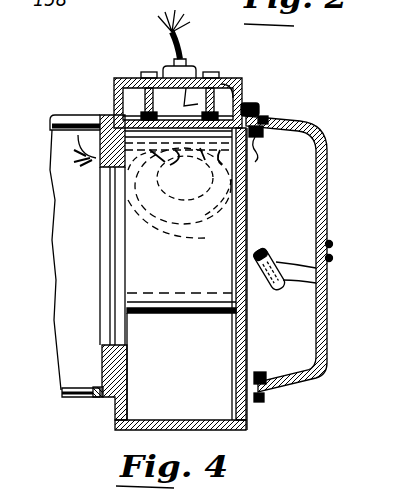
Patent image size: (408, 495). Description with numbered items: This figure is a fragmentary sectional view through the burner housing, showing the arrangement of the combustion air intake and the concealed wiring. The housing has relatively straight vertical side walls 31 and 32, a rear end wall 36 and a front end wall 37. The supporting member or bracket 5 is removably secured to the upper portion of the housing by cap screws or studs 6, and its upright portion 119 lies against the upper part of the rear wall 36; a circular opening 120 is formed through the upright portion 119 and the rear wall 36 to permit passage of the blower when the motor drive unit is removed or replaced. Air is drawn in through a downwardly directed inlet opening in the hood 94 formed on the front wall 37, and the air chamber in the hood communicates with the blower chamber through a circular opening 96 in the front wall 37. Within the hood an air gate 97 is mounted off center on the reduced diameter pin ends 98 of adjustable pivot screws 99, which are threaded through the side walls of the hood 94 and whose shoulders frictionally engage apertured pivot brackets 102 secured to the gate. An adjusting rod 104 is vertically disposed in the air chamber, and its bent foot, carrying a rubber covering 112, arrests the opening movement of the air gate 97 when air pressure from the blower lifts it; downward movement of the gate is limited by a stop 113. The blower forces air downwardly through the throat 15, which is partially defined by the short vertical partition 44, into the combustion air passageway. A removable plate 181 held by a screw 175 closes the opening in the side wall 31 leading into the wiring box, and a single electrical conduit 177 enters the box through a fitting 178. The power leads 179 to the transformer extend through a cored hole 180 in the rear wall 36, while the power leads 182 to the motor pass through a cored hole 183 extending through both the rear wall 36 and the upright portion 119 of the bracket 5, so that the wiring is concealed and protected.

The supporting member or bracket 5 is at (78, 398).
The cap screws or studs 6 is at (80, 128).
The throat 15 is at (158, 384).
The side wall 31 is at (243, 103).
The side wall 32 is at (224, 430).
The rear end wall 36 is at (125, 353).
The front end wall 37 is at (237, 335).
The vertically disposed partition 44 is at (147, 318).
The hood 94 is at (305, 123).
The circular opening 96 is at (237, 284).
The air gate 97 is at (263, 306).
The pin ends 98 is at (260, 372).
The adjustable pivot screws 99 is at (264, 114).
The pivot brackets 102 is at (269, 154).
The adjusting rod 104 is at (327, 268).
The rubber covering 112 is at (325, 291).
The stop 113 is at (257, 252).
The upright portion 119 is at (110, 397).
The circular opening 120 is at (105, 303).
The screw 175 is at (147, 76).
The electrical conduit 177 is at (181, 29).
The fitting 178 is at (194, 66).
The power leads 179 is at (183, 190).
The cored hole 180 is at (180, 201).
The removable plate 181 is at (123, 78).
The power leads 182 is at (82, 160).
The cored hole 183 is at (178, 169).